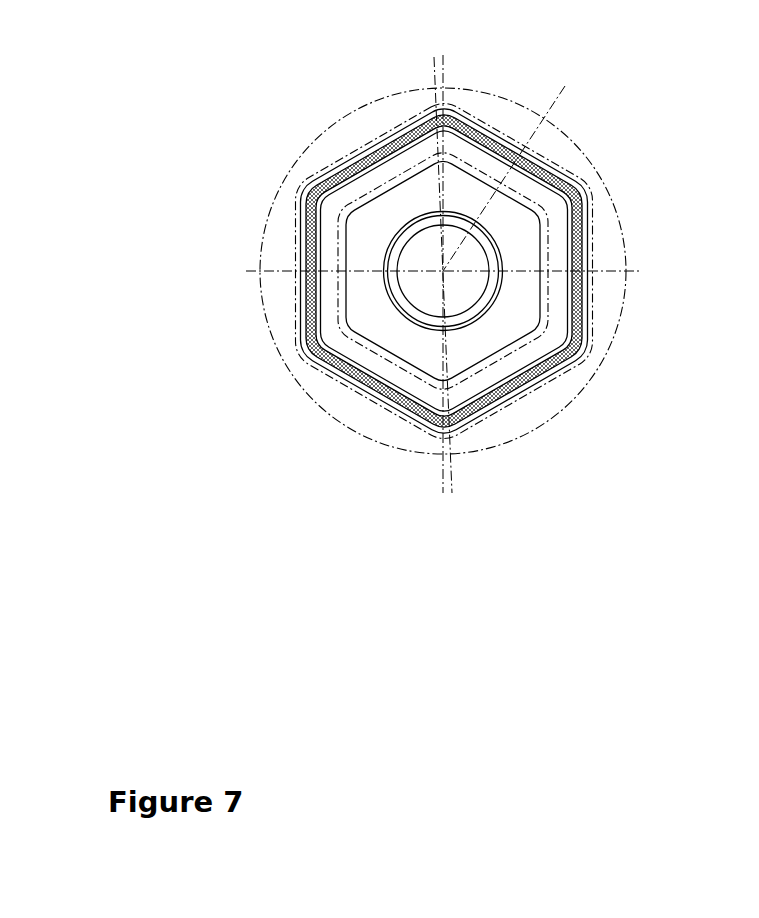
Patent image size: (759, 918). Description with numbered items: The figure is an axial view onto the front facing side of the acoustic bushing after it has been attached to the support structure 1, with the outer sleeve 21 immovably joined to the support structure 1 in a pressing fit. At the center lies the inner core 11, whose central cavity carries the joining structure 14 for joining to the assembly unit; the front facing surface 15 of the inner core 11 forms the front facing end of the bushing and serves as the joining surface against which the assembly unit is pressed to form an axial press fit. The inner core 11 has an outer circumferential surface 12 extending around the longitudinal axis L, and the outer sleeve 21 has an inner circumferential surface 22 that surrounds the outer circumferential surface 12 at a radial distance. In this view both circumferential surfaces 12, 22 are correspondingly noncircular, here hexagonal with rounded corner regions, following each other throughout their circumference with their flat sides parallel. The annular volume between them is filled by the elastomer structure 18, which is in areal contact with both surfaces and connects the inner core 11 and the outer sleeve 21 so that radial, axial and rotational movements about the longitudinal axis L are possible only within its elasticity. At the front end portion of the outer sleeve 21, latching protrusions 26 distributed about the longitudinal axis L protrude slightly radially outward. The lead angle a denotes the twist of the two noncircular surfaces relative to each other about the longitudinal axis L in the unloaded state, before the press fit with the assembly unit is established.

The support structure 1 is at (357, 128).
The inner core 11 is at (358, 301).
The outer circumferential surface 12 is at (520, 209).
The joining structure 14 is at (393, 247).
The front facing surface 15 is at (516, 312).
The elastomer structure 18 is at (368, 363).
The outer sleeve 21 is at (472, 420).
The inner circumferential surface 22 is at (541, 182).
The latching protrusions 26 is at (295, 262).
The longitudinal axis L is at (509, 167).
The lead angle a is at (398, 70).